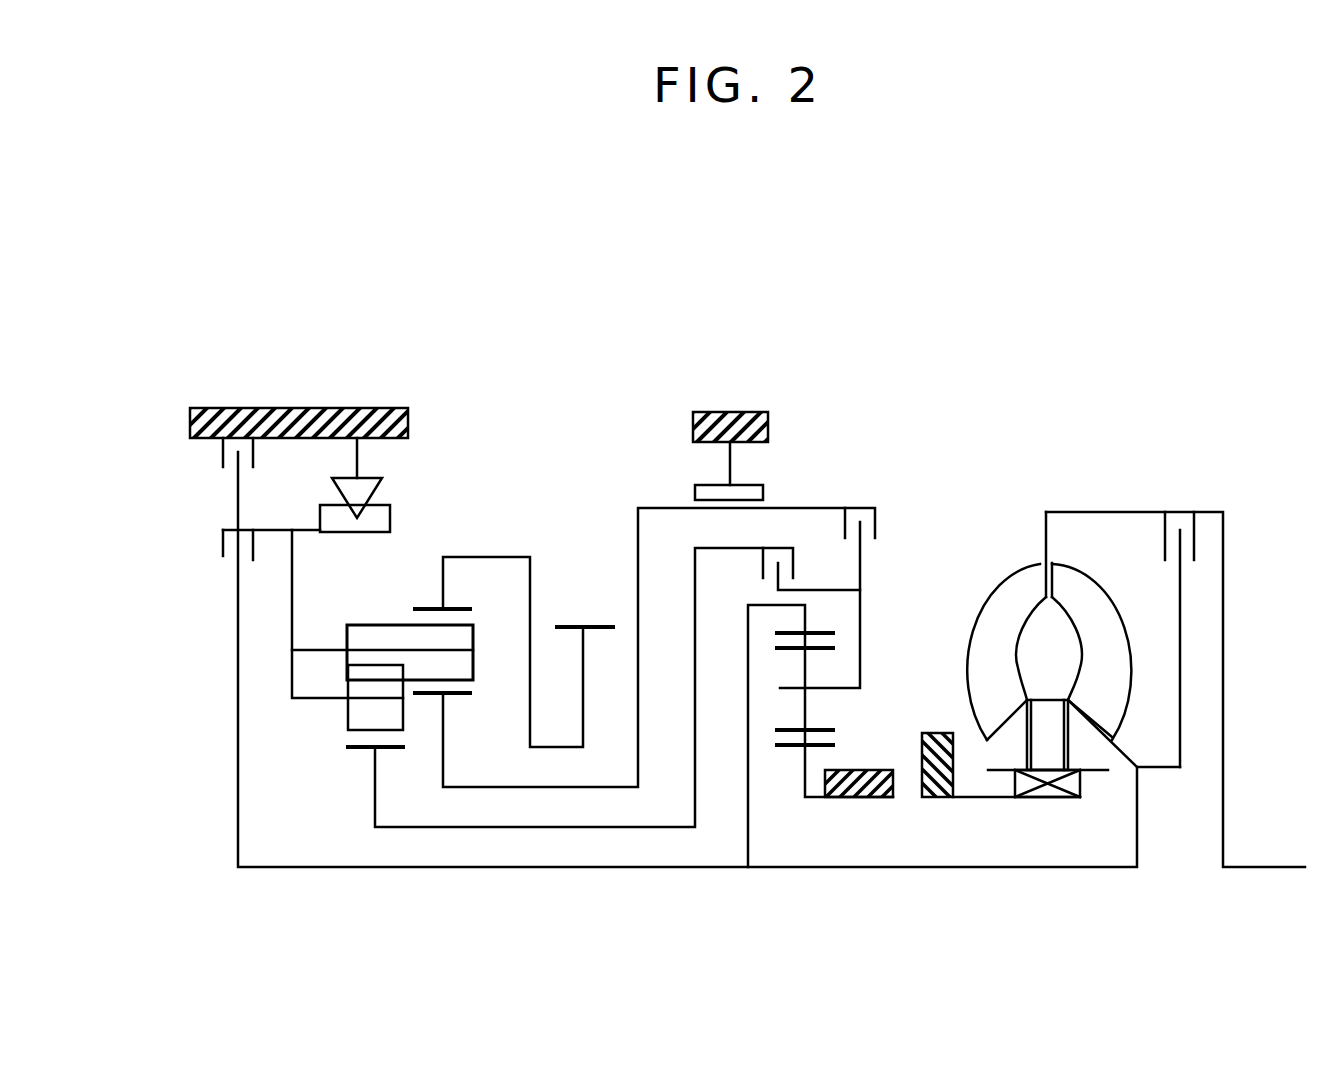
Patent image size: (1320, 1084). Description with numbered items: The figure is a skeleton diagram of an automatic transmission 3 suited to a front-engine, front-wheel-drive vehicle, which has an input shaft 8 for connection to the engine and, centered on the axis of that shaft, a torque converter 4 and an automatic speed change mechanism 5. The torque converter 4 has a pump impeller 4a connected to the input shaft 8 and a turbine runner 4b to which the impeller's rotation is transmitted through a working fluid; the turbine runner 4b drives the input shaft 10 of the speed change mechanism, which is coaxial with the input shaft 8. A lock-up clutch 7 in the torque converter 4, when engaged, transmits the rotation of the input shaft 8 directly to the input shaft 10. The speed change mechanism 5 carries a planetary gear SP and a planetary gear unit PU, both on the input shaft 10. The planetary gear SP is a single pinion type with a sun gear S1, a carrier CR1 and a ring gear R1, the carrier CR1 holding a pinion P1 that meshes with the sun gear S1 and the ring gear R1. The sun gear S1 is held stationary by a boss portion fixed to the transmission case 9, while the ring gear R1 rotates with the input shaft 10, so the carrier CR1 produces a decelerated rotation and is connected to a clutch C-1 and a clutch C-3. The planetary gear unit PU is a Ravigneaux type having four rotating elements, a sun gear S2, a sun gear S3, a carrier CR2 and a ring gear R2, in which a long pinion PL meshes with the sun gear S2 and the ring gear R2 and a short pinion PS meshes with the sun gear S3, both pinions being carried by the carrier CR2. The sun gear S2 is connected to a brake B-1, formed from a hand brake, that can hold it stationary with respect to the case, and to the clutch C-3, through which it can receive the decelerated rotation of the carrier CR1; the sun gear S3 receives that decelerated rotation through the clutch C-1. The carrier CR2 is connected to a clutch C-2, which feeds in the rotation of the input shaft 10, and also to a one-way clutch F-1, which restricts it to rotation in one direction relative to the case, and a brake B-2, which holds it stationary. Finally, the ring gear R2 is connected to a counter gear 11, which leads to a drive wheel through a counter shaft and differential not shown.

The automatic transmission 3 is at (789, 251).
The torque converter 4 is at (1018, 503).
The pump impeller 4a is at (1027, 590).
The turbine runner 4b is at (1095, 615).
The automatic speed change mechanism 5 is at (623, 366).
The lock-up clutch 7 is at (1203, 512).
The input shaft 8 is at (1245, 866).
The transmission case 9 is at (768, 441).
The input shaft 10 is at (1095, 868).
The counter gear 11 is at (597, 637).
The planetary gear unit PU is at (435, 522).
The planetary gear SP is at (843, 737).
The sun gear S1 is at (787, 750).
The ring gear R1 is at (820, 622).
The pinion P1 is at (808, 728).
The carrier CR1 is at (870, 608).
The sun gear S2 is at (445, 697).
The sun gear S3 is at (360, 752).
The ring gear R2 is at (455, 605).
The long pinion PL is at (458, 638).
The short pinion PS is at (365, 712).
The carrier CR2 is at (280, 670).
The brake B-1 is at (729, 440).
The brake B-2 is at (294, 423).
The one-way clutch F-1 is at (355, 455).
The clutch C-1 is at (784, 569).
The clutch C-2 is at (254, 560).
The clutch C-3 is at (840, 598).